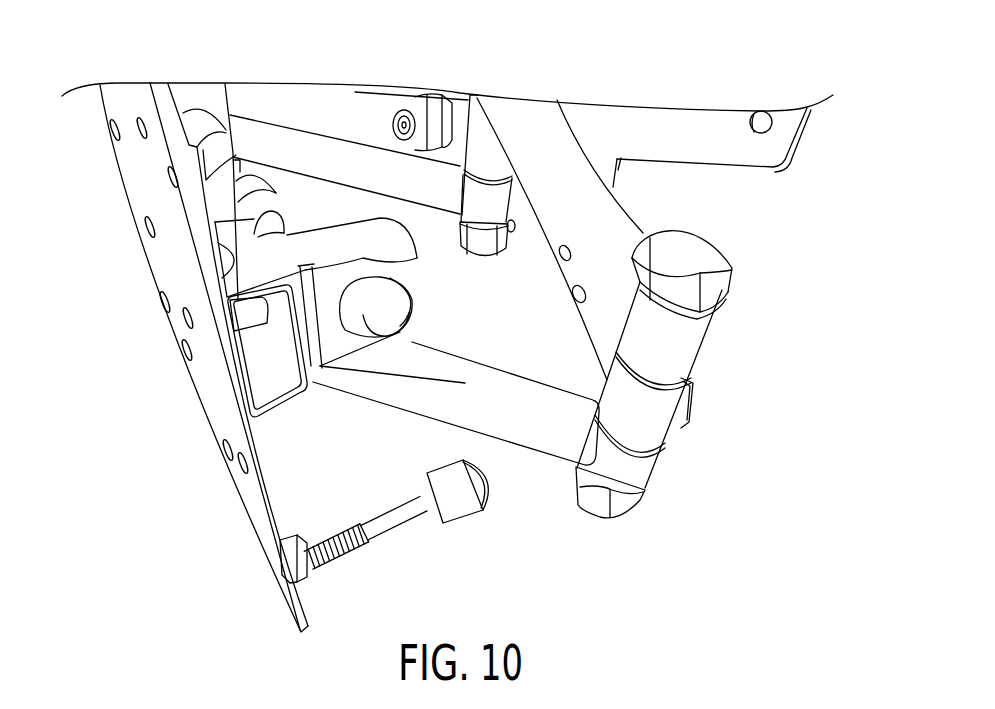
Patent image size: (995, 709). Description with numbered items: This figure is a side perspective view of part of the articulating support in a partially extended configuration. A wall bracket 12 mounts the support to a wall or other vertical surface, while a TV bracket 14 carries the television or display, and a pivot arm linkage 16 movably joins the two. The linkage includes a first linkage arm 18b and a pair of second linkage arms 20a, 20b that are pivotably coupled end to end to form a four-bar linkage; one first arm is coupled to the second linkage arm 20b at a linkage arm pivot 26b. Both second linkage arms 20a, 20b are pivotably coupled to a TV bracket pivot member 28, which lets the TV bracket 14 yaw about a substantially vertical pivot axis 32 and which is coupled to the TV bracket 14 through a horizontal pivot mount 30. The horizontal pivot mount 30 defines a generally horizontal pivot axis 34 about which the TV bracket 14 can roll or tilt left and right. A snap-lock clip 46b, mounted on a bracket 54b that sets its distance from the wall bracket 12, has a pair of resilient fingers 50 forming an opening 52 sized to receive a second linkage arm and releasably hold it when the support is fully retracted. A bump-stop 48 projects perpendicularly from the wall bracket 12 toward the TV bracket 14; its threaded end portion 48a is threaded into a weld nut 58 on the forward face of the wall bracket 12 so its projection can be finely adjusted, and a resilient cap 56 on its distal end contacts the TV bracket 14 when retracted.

The wall bracket 12 is at (232, 478).
The TV bracket 14 is at (772, 170).
The pivot arm linkage 16 is at (535, 526).
The first linkage arm 18b is at (398, 410).
The second linkage arm 20a is at (256, 117).
The second linkage arm 20b is at (632, 210).
The linkage arm pivot 26b is at (655, 405).
The TV bracket pivot member 28 is at (470, 197).
The horizontal pivot mount 30 is at (462, 110).
The vertical pivot axis 32 is at (478, 258).
The horizontal pivot axis 34 is at (392, 124).
The snap-lock clip 46b is at (447, 319).
The bump-stop 48 is at (385, 537).
The threaded end portion 48a is at (337, 512).
The resilient fingers 50 is at (255, 175).
The opening 52 is at (272, 202).
The bracket 54b is at (293, 413).
The cap 56 is at (447, 462).
The weld nut 58 is at (288, 538).